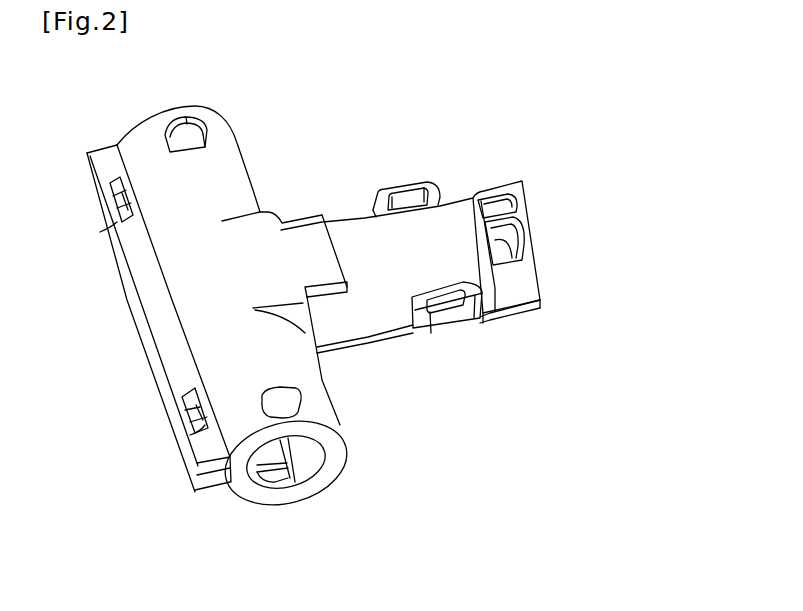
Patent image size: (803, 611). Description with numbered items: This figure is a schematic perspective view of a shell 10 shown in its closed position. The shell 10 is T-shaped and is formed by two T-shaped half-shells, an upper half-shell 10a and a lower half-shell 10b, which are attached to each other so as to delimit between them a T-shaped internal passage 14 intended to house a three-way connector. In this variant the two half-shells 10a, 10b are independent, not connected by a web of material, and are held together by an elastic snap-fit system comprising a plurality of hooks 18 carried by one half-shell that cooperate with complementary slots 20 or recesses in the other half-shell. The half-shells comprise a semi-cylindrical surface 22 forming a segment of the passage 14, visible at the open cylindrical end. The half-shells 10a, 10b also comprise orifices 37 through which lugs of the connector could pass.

The shell 10 is at (533, 128).
The upper half-shell 10a is at (529, 268).
The lower half-shell 10b is at (533, 318).
The T-shaped internal passage 14 is at (312, 462).
The hooks 18 is at (110, 197).
The slots 20 is at (117, 229).
The semi-cylindrical surface 22 is at (288, 480).
The orifices 37 is at (194, 109).